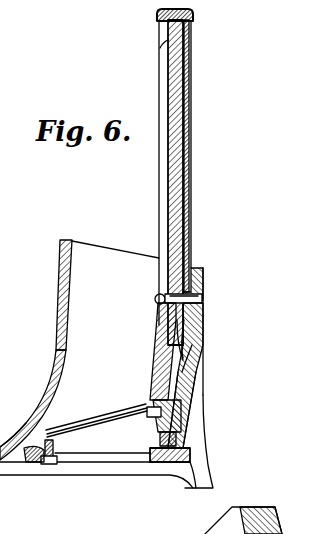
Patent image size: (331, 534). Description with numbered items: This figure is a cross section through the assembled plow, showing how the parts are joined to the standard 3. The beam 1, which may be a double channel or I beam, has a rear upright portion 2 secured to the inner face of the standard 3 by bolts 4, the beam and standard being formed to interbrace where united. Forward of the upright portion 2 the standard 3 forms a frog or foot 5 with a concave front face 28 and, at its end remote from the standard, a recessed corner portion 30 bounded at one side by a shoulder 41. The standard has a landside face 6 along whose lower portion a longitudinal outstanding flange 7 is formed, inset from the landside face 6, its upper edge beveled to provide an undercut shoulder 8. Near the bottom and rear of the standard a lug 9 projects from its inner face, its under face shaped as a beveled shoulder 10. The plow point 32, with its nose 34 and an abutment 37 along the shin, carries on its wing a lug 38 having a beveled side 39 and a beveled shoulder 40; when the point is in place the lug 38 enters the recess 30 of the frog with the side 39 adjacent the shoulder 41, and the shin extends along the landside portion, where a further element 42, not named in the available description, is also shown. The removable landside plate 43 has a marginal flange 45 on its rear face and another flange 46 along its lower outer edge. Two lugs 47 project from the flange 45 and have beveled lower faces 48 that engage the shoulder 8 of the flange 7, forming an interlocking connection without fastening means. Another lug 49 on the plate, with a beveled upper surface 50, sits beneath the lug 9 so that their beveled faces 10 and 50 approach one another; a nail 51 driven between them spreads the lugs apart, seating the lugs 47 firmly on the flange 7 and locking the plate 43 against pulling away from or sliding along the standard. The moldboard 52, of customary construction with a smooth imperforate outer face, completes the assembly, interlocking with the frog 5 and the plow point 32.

The beam 1 is at (194, 29).
The rear upright portion 2 is at (178, 199).
The standard 3 is at (207, 268).
The bolts 4 is at (205, 298).
The frog or foot 5 is at (95, 455).
The landside face 6 is at (206, 321).
The longitudinal outstanding flange 7 is at (198, 395).
The undercut shoulder 8 is at (207, 389).
The lug 9 is at (150, 430).
The beveled shoulder 10 is at (158, 440).
The concave front face 28 is at (90, 420).
The recessed corner portion 30 is at (56, 447).
The plow point 32 is at (118, 477).
The nose 34 is at (214, 490).
The abutment 37 is at (22, 466).
The lug 38 is at (34, 464).
The beveled or undercut side 39 is at (40, 464).
The beveled or undercut shoulder 40 is at (36, 429).
The shoulder 41 is at (58, 462).
The curved wall 42 is at (54, 403).
The landside plate 43 is at (170, 434).
The marginal rib or flange 45 is at (173, 464).
The flange 46 is at (191, 458).
The lugs 47 is at (208, 345).
The beveled lower faces 48 is at (206, 372).
The lug 49 is at (133, 456).
The beveled upper surface 50 is at (160, 464).
The nail 51 is at (218, 448).
The moldboard 52 is at (57, 313).